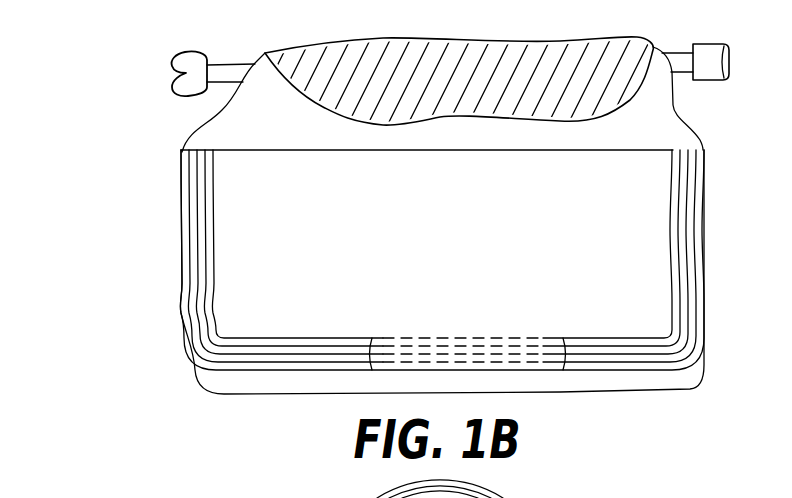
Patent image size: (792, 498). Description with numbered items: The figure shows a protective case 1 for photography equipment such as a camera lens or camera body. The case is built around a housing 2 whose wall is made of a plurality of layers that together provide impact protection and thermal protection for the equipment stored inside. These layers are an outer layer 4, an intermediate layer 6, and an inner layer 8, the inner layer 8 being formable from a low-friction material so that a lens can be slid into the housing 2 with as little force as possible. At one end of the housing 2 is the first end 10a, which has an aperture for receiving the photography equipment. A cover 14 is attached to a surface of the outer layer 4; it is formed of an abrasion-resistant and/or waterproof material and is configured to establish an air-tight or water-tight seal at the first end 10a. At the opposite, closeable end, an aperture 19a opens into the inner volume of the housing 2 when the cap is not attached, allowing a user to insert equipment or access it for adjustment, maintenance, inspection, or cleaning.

The protective case 1 is at (121, 91).
The housing 2 is at (730, 145).
The outer layer 4 is at (347, 365).
The intermediate layer 6 is at (257, 352).
The inner layer 8 is at (207, 305).
The first end 10a is at (240, 175).
The cover 14 is at (181, 230).
The aperture 19a is at (467, 337).